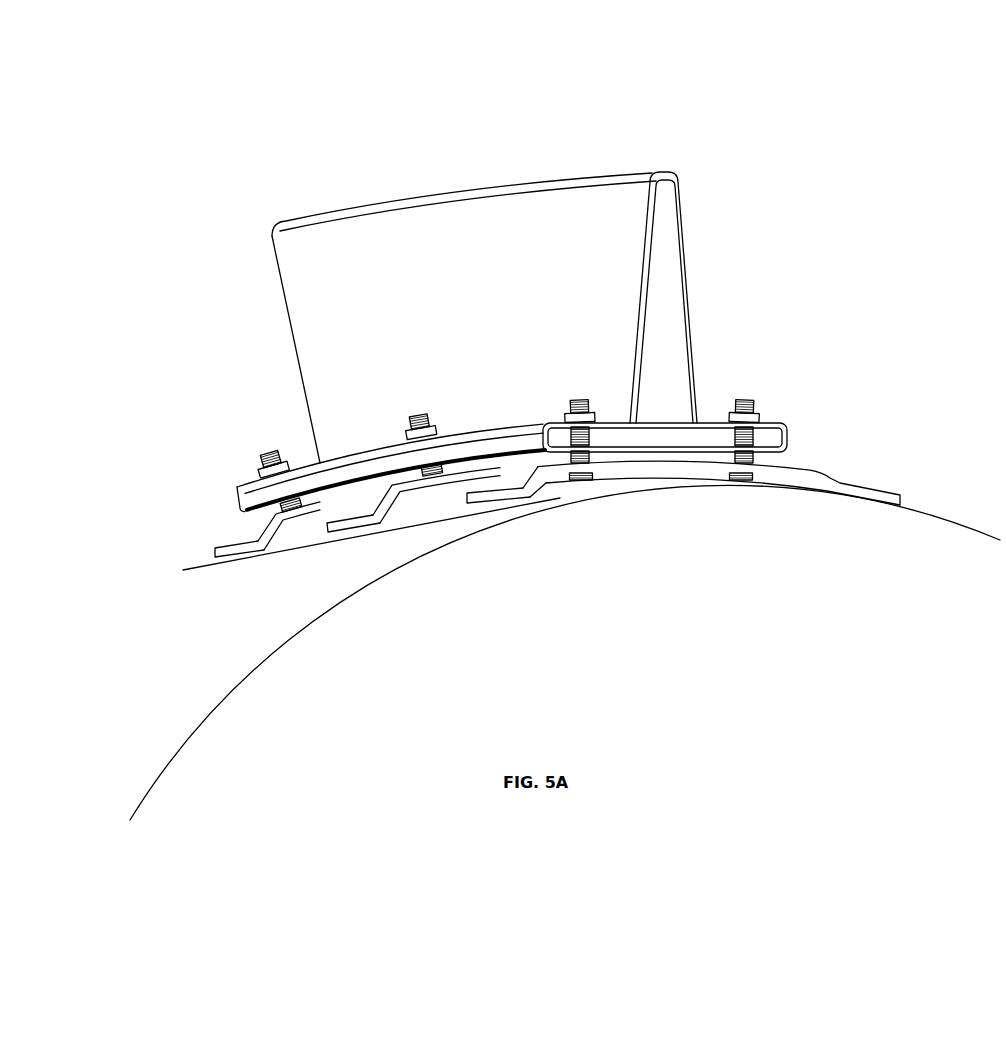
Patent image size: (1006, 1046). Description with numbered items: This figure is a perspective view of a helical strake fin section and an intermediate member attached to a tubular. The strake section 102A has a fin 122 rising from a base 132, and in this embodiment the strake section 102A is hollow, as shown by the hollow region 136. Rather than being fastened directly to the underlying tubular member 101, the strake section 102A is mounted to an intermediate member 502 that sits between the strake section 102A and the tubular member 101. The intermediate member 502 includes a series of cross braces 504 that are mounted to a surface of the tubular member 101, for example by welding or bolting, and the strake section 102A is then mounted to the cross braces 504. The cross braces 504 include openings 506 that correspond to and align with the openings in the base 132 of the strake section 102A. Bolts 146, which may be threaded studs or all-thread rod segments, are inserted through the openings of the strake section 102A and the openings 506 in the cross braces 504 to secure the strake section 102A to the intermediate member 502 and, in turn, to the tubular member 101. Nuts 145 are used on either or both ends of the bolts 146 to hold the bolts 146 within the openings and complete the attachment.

The tubular member 101 is at (565, 652).
The strake section 102A is at (243, 160).
The fin 122 is at (628, 170).
The base 132 is at (245, 480).
The hollow region 136 is at (673, 292).
The nuts 145 is at (291, 464).
The bolts 146 is at (742, 401).
The intermediate member 502 is at (828, 462).
The cross braces 504 is at (337, 530).
The openings 506 is at (275, 510).